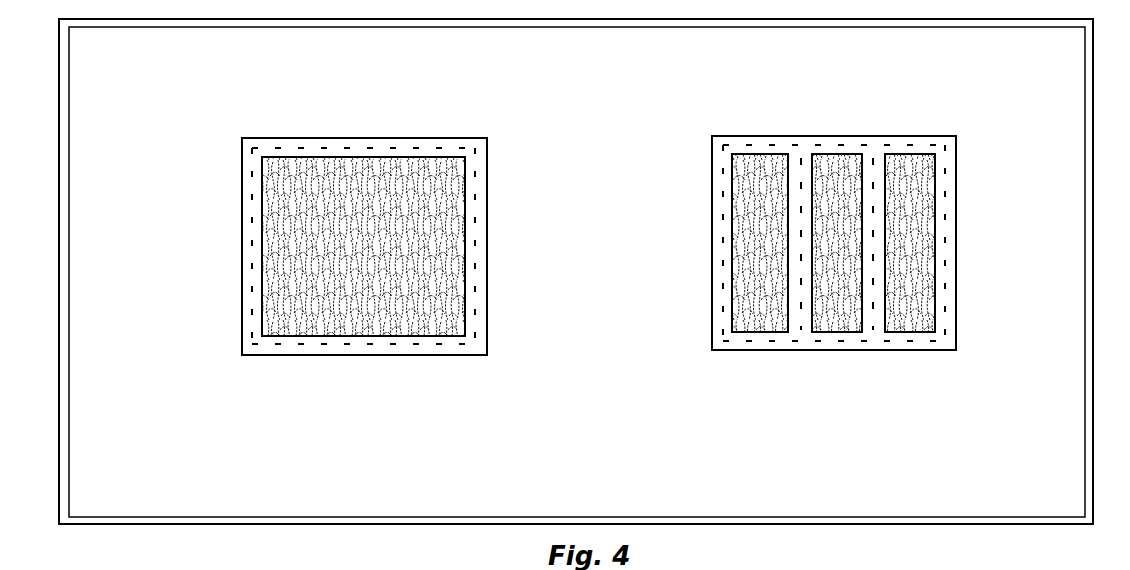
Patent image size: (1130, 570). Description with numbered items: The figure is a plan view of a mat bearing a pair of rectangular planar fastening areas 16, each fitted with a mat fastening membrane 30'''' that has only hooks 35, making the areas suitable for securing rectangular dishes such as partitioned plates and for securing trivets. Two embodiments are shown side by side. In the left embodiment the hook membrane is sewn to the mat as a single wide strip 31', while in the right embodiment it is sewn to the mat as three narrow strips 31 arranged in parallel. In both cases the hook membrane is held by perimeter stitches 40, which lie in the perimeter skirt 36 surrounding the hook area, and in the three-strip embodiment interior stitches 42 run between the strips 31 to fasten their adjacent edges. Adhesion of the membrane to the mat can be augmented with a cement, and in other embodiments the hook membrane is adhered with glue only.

The planar fastening area 16 is at (514, 168).
The mat fastening membrane 30'''' is at (631, 240).
The single wide strip 31' is at (363, 210).
The narrow strips 31 is at (833, 208).
The hooks 35 is at (460, 228).
The perimeter skirt 36 is at (435, 356).
The perimeter stitches 40 is at (357, 346).
The interior stitches 42 is at (873, 301).